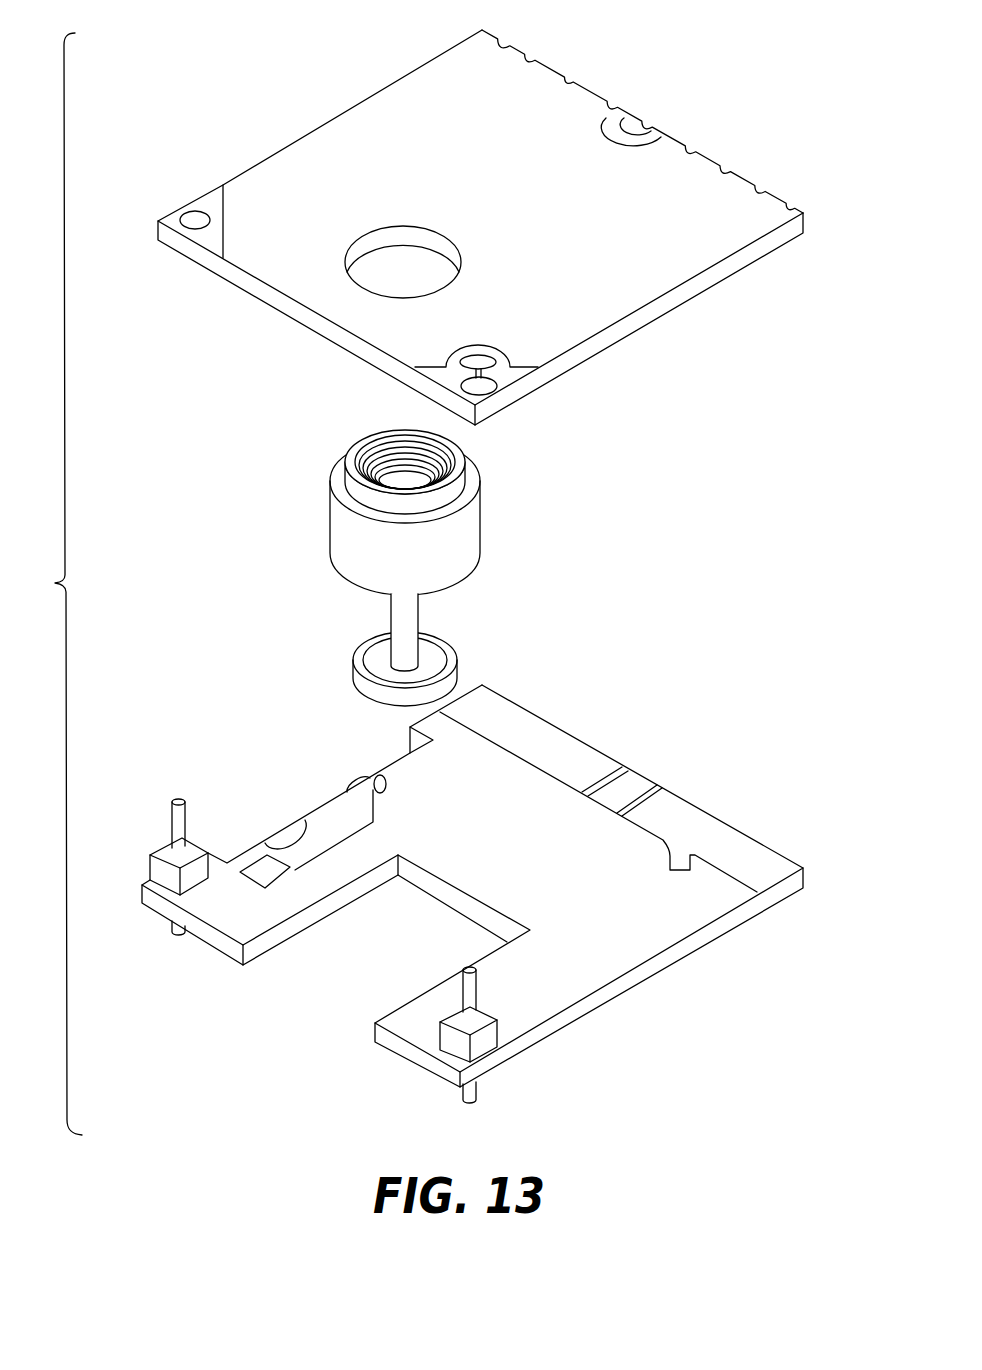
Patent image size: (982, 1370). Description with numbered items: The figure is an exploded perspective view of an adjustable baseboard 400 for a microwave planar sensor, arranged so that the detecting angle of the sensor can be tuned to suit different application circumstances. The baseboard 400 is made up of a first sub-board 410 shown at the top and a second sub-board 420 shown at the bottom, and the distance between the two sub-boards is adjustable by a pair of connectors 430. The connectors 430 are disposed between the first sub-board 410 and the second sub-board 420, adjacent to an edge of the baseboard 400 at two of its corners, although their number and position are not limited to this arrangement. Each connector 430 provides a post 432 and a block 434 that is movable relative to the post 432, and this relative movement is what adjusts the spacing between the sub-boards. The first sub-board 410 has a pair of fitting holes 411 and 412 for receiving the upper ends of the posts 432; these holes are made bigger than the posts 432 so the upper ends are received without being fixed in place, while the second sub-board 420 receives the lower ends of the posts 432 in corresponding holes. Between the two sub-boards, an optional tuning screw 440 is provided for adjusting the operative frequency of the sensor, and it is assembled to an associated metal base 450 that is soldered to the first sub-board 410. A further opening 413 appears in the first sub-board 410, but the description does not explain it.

The baseboard 400 is at (46, 584).
The first sub-board 410 is at (805, 212).
The fitting hole 411 is at (172, 206).
The fitting hole 412 is at (500, 396).
The central aperture 413 is at (447, 233).
The second sub-board 420 is at (800, 852).
The connector 430 is at (152, 862).
The post 432 is at (180, 936).
The block 434 is at (167, 843).
The tuning screw 440 is at (515, 655).
The metal base 450 is at (522, 514).